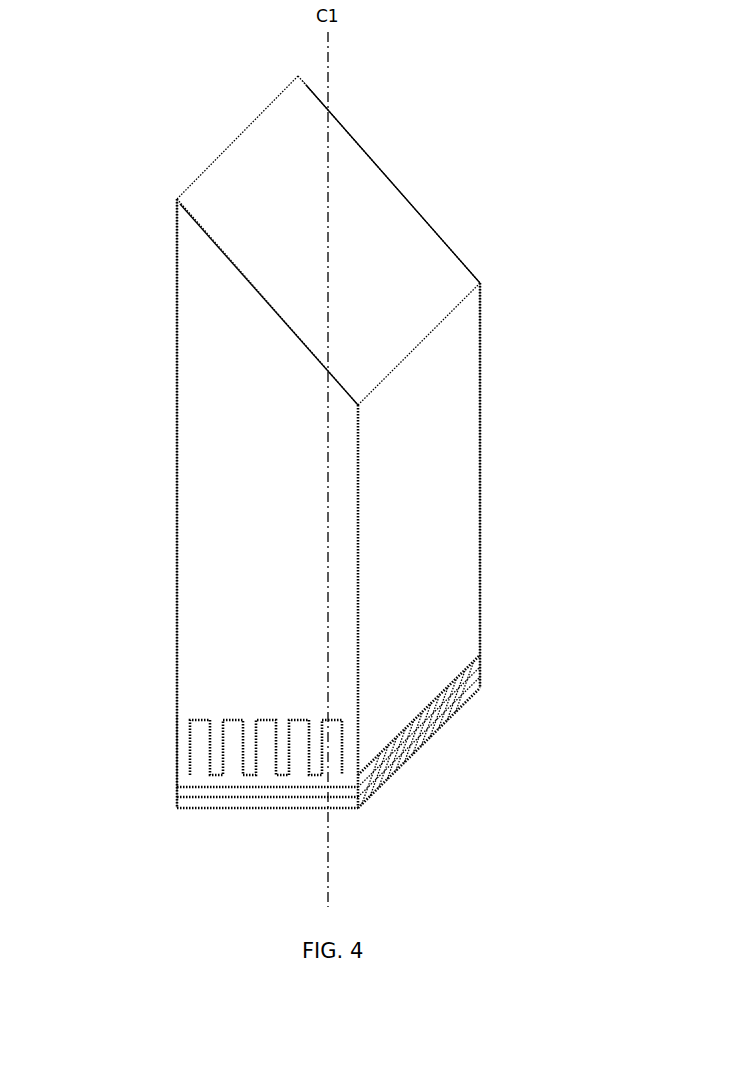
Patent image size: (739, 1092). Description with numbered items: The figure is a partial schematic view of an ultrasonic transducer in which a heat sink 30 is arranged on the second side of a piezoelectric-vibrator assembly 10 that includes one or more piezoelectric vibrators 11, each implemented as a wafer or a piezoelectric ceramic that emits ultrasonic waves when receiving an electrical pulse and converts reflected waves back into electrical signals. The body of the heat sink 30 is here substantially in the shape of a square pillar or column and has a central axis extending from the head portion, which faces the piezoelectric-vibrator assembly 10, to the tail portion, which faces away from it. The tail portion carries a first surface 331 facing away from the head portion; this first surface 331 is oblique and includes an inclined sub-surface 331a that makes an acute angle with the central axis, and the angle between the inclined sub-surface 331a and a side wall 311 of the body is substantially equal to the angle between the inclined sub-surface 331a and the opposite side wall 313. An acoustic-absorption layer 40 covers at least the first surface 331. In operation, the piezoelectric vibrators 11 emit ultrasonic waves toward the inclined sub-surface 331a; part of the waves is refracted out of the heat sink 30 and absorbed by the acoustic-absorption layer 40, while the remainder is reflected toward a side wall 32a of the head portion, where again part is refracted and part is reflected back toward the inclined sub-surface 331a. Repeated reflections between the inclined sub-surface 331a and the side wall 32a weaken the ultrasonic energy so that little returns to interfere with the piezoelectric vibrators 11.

The piezoelectric-vibrator assembly 10 is at (242, 787).
The piezoelectric vibrator 11 is at (438, 731).
The heat sink 30 is at (402, 528).
The side wall of the body 311 is at (172, 486).
The opposite side wall of the body 313 is at (488, 418).
The side wall of the head portion 32a is at (172, 735).
The first surface 331 is at (328, 240).
The inclined sub-surface 331a is at (378, 196).
The acoustic-absorption layer 40 is at (208, 783).